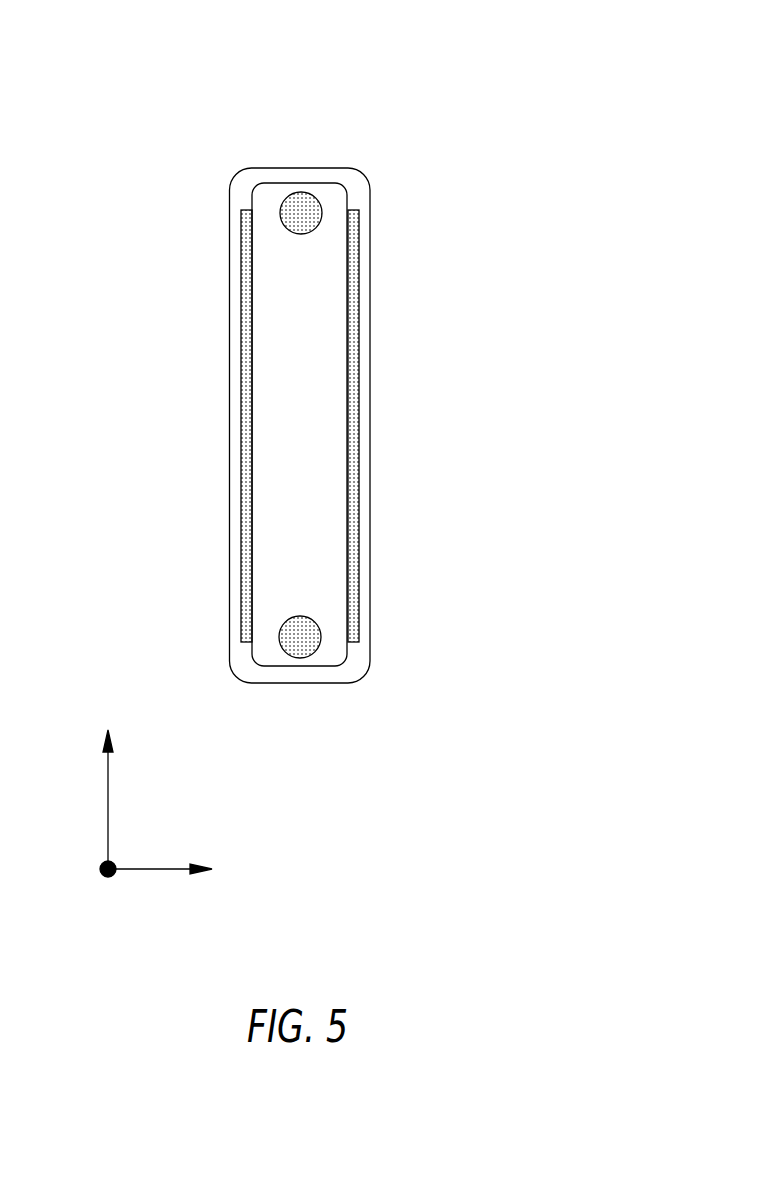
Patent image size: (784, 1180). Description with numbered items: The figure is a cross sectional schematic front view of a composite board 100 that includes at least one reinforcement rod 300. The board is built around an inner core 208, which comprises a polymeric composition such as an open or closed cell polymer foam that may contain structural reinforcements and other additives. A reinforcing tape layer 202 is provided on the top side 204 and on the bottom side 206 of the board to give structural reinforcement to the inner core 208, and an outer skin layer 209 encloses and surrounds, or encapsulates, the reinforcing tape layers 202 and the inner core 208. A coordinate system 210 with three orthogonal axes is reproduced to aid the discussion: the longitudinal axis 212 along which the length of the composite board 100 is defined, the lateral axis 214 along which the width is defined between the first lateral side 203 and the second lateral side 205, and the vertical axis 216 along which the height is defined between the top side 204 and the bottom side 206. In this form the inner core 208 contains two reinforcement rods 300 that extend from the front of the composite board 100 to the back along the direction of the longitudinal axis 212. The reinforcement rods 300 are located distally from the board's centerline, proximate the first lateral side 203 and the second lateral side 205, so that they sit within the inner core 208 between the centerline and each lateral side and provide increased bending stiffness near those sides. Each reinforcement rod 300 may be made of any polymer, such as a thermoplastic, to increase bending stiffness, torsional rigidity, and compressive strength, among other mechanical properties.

The composite board 100 is at (306, 403).
The reinforcing tape layer 202 is at (243, 308).
The first lateral side 203 is at (297, 153).
The top side 204 is at (395, 398).
The second lateral side 205 is at (296, 703).
The bottom side 206 is at (203, 441).
The inner core 208 is at (320, 437).
The outer skin layer 209 is at (297, 429).
The coordinate system 210 is at (119, 812).
The longitudinal axis 212 is at (99, 866).
The lateral axis 214 is at (103, 797).
The vertical axis 216 is at (155, 872).
The reinforcement rod 300 is at (322, 207).